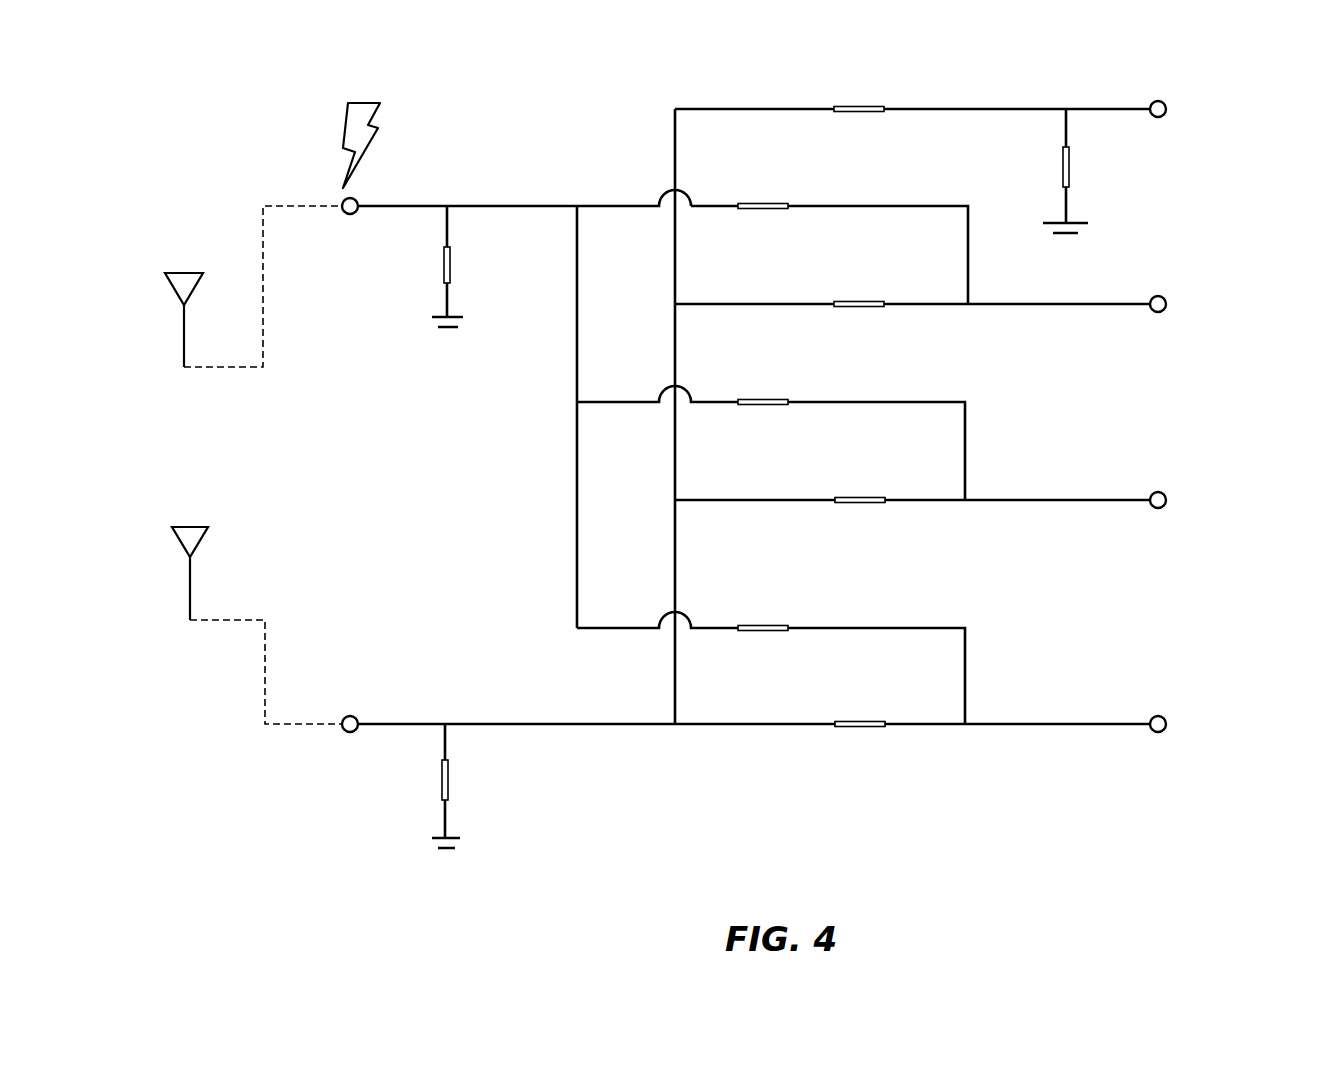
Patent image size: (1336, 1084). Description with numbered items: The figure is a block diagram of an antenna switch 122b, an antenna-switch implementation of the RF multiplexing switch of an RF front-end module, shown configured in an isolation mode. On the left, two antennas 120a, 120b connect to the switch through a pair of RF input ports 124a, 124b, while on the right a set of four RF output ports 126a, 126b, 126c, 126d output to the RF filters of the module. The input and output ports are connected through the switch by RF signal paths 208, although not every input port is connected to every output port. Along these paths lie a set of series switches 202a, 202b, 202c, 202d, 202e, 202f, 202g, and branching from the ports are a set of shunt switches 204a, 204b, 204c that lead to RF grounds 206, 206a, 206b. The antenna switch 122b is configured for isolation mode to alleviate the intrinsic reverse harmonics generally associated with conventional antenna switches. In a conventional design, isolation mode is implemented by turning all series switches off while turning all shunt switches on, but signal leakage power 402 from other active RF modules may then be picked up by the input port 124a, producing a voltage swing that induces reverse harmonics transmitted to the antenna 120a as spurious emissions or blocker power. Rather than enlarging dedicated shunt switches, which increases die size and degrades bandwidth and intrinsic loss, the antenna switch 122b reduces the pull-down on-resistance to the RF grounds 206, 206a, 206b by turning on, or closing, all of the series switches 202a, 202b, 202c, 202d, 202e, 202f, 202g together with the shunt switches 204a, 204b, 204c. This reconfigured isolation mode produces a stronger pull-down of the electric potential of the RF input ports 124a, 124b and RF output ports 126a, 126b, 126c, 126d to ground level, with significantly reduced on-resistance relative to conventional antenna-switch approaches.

The antenna switch 122b is at (222, 98).
The signal leakage power 402 is at (345, 150).
The antenna 120a is at (187, 271).
The antenna 120b is at (190, 525).
The RF input port 124a is at (343, 214).
The RF input port 124b is at (352, 714).
The RF signal path 208 is at (468, 205).
The shunt switch 204a is at (1128, 189).
The shunt switch 204b is at (410, 299).
The shunt switch 204c is at (430, 786).
The RF ground 206 is at (448, 328).
The RF ground 206a is at (1073, 235).
The RF ground 206b is at (462, 837).
The series switch 202a is at (870, 100).
The series switch 202b is at (770, 187).
The series switch 202c is at (835, 280).
The series switch 202d is at (793, 383).
The series switch 202e is at (868, 515).
The series switch 202f is at (763, 637).
The series switch 202g is at (860, 735).
The RF output port 126a is at (1165, 116).
The RF output port 126b is at (1165, 311).
The RF output port 126c is at (1167, 502).
The RF output port 126d is at (1166, 718).